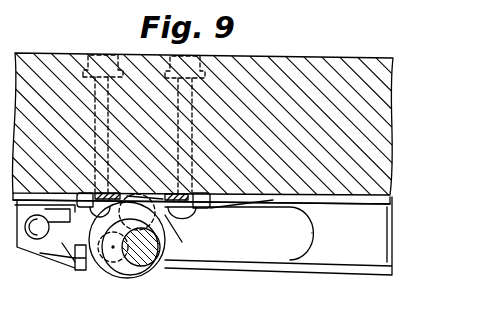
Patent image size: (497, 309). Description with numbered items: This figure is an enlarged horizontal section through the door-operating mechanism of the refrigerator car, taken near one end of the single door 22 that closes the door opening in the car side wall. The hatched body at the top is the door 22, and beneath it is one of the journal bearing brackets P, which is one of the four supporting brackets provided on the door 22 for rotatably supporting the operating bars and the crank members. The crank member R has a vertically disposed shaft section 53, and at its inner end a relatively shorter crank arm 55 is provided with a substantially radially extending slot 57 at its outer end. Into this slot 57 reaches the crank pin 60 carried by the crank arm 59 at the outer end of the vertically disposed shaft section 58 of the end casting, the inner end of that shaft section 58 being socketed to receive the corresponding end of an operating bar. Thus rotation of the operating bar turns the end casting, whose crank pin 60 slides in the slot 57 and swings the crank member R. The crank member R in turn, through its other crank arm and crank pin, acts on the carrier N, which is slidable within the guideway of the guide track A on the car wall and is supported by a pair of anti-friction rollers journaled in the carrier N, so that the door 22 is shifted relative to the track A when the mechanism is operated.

The door 22 is at (312, 58).
The shaft section 53 is at (172, 218).
The crank arm 55 is at (170, 233).
The slot 57 is at (95, 262).
The shaft section 58 is at (150, 265).
The crank arm 59 is at (72, 247).
The crank pin 60 is at (110, 263).
The journal bearing bracket P is at (212, 208).
The crank member R is at (297, 258).
The carrier N is at (330, 258).
The guide track A is at (375, 273).